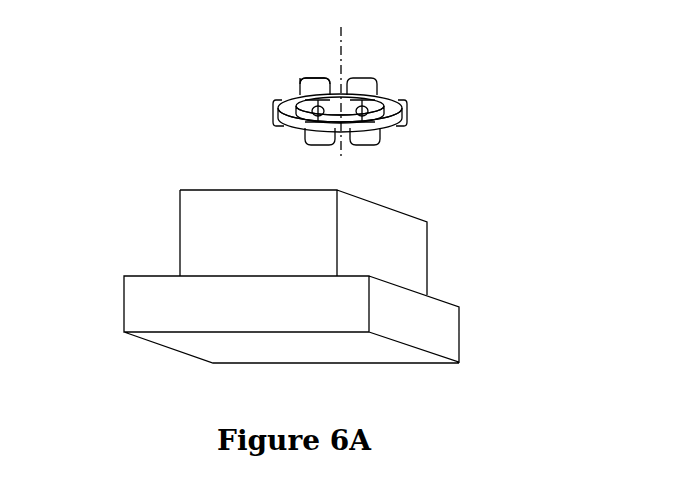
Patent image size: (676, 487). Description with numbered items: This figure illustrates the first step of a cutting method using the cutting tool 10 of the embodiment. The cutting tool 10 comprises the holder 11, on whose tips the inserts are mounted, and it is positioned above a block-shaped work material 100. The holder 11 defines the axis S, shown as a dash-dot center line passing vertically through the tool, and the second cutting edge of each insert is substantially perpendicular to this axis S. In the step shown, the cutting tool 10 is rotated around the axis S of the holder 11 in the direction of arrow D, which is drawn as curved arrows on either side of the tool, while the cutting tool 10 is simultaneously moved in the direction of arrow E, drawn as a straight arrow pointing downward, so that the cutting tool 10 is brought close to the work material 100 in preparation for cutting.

The work material 100 is at (166, 257).
The cutting tool 10 is at (397, 85).
The holder 11 is at (322, 77).
The axis S is at (343, 33).
The arrow D is at (272, 103).
The arrow E is at (268, 122).